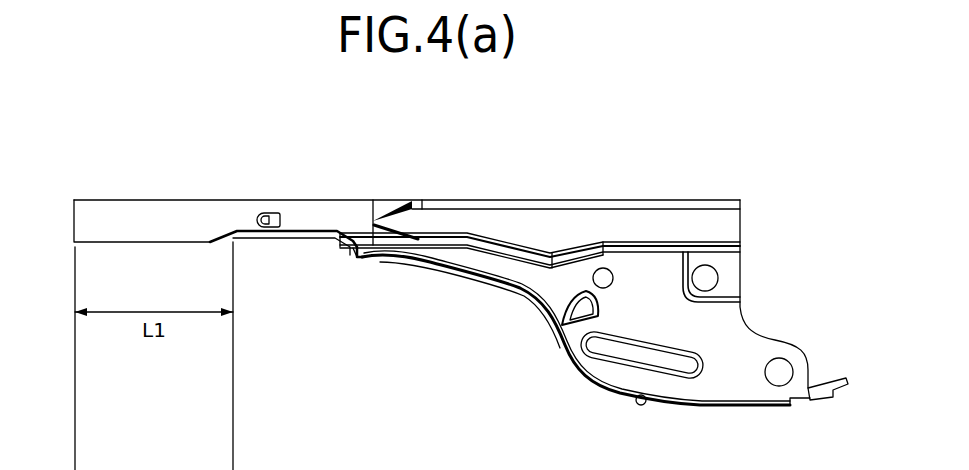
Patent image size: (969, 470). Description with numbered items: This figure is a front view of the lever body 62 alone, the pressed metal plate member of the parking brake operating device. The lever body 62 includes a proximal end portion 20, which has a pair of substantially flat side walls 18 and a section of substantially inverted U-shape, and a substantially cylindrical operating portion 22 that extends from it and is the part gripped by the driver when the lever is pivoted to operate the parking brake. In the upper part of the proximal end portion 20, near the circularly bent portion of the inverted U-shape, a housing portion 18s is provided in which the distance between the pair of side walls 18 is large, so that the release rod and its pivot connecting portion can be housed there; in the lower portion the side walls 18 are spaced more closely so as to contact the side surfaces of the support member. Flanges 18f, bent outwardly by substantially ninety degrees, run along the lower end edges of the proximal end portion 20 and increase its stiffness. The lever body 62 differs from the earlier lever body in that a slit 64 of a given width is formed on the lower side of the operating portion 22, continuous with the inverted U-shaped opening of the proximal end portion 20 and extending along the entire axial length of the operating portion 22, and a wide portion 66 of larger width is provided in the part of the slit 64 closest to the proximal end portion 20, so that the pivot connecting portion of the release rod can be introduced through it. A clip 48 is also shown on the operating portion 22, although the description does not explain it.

The side walls 18 is at (727, 373).
The housing portion 18s is at (545, 222).
The flanges 18f is at (510, 290).
The proximal end portion 20 is at (550, 369).
The operating portion 22 is at (170, 218).
The clip 48 is at (268, 213).
The lever body 62 is at (367, 160).
The slit 64 is at (110, 260).
The wide portion 66 is at (291, 255).